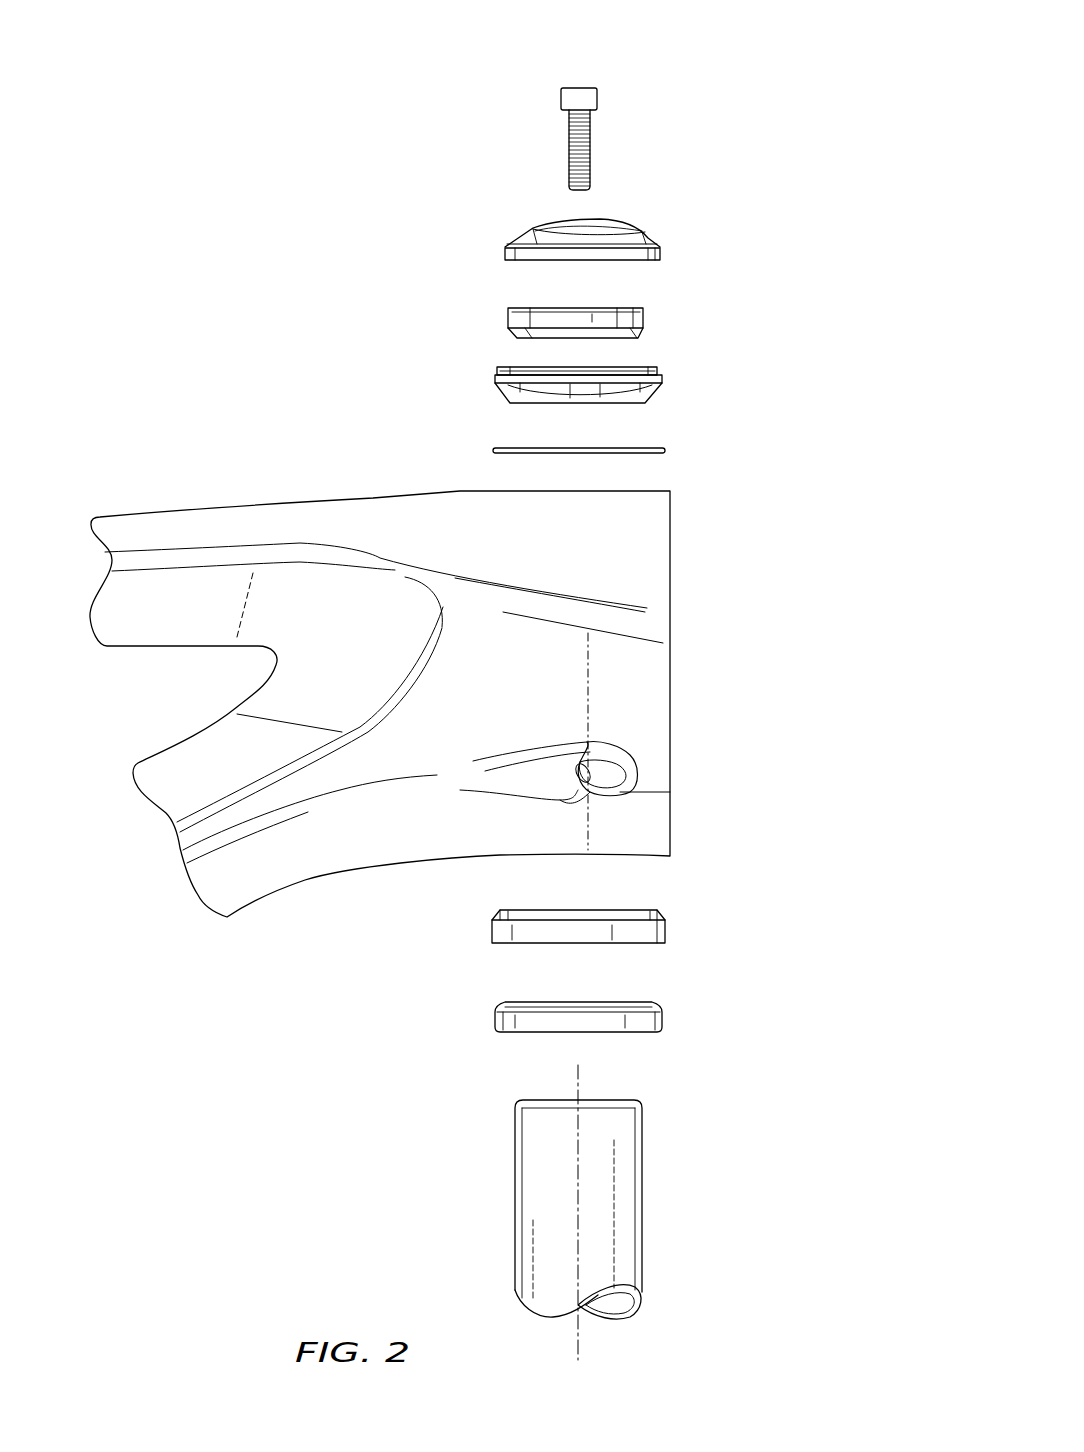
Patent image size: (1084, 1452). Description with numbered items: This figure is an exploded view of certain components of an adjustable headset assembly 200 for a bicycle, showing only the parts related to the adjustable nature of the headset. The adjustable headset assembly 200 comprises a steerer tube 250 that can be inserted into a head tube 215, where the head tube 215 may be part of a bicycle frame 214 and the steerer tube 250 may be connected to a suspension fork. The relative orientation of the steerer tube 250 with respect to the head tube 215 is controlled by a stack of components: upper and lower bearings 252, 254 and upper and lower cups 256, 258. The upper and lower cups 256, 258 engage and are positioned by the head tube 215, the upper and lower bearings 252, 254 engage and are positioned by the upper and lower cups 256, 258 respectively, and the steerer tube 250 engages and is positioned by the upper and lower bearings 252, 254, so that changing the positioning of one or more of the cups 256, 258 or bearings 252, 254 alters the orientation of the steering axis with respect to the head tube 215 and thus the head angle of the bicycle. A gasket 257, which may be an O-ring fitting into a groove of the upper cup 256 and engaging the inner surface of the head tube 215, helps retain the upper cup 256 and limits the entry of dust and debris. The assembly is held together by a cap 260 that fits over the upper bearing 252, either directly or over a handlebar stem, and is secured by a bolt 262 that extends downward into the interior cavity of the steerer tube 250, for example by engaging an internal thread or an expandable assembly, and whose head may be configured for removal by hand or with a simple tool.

The adjustable headset assembly 200 is at (867, 92).
The bicycle frame 214 is at (288, 426).
The head tube 215 is at (656, 545).
The steerer tube 250 is at (642, 1205).
The upper bearing 252 is at (645, 314).
The lower bearing 254 is at (664, 1020).
The upper cup 256 is at (660, 386).
The gasket 257 is at (666, 450).
The lower cup 258 is at (668, 928).
The cap 260 is at (655, 242).
The bolt 262 is at (599, 101).